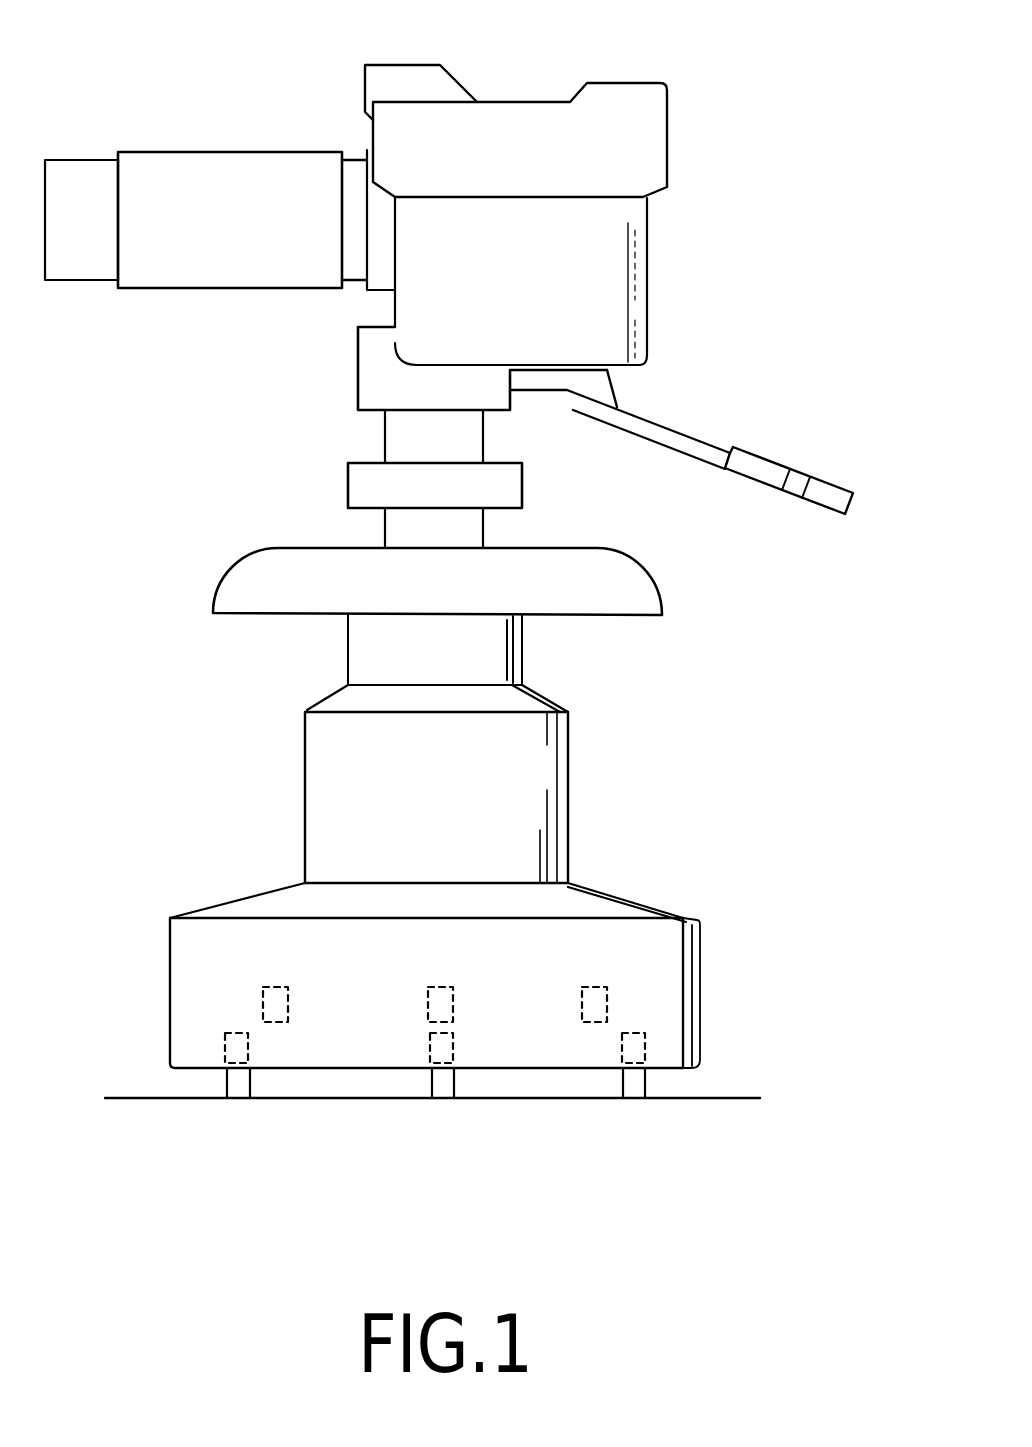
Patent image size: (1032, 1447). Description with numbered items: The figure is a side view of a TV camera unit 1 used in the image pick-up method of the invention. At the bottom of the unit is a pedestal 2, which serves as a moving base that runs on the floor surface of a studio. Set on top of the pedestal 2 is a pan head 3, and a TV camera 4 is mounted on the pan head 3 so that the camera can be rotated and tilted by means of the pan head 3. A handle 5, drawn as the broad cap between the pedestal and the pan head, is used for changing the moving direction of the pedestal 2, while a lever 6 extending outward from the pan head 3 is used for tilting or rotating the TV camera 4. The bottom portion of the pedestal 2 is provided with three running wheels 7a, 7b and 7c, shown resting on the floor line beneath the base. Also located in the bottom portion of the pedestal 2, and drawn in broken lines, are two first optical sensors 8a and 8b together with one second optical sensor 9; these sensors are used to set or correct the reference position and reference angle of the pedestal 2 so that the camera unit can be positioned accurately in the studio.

The TV camera unit 1 is at (843, 100).
The pedestal 2 is at (570, 770).
The pan head 3 is at (377, 382).
The TV camera 4 is at (630, 142).
The handle 5 is at (640, 578).
The lever 6 is at (767, 457).
The running wheel 7a is at (625, 1082).
The running wheel 7b is at (230, 1082).
The running wheel 7c is at (432, 1082).
The first optical sensor 8a is at (607, 995).
The first optical sensor 8b is at (262, 1001).
The second optical sensor 9 is at (453, 1012).